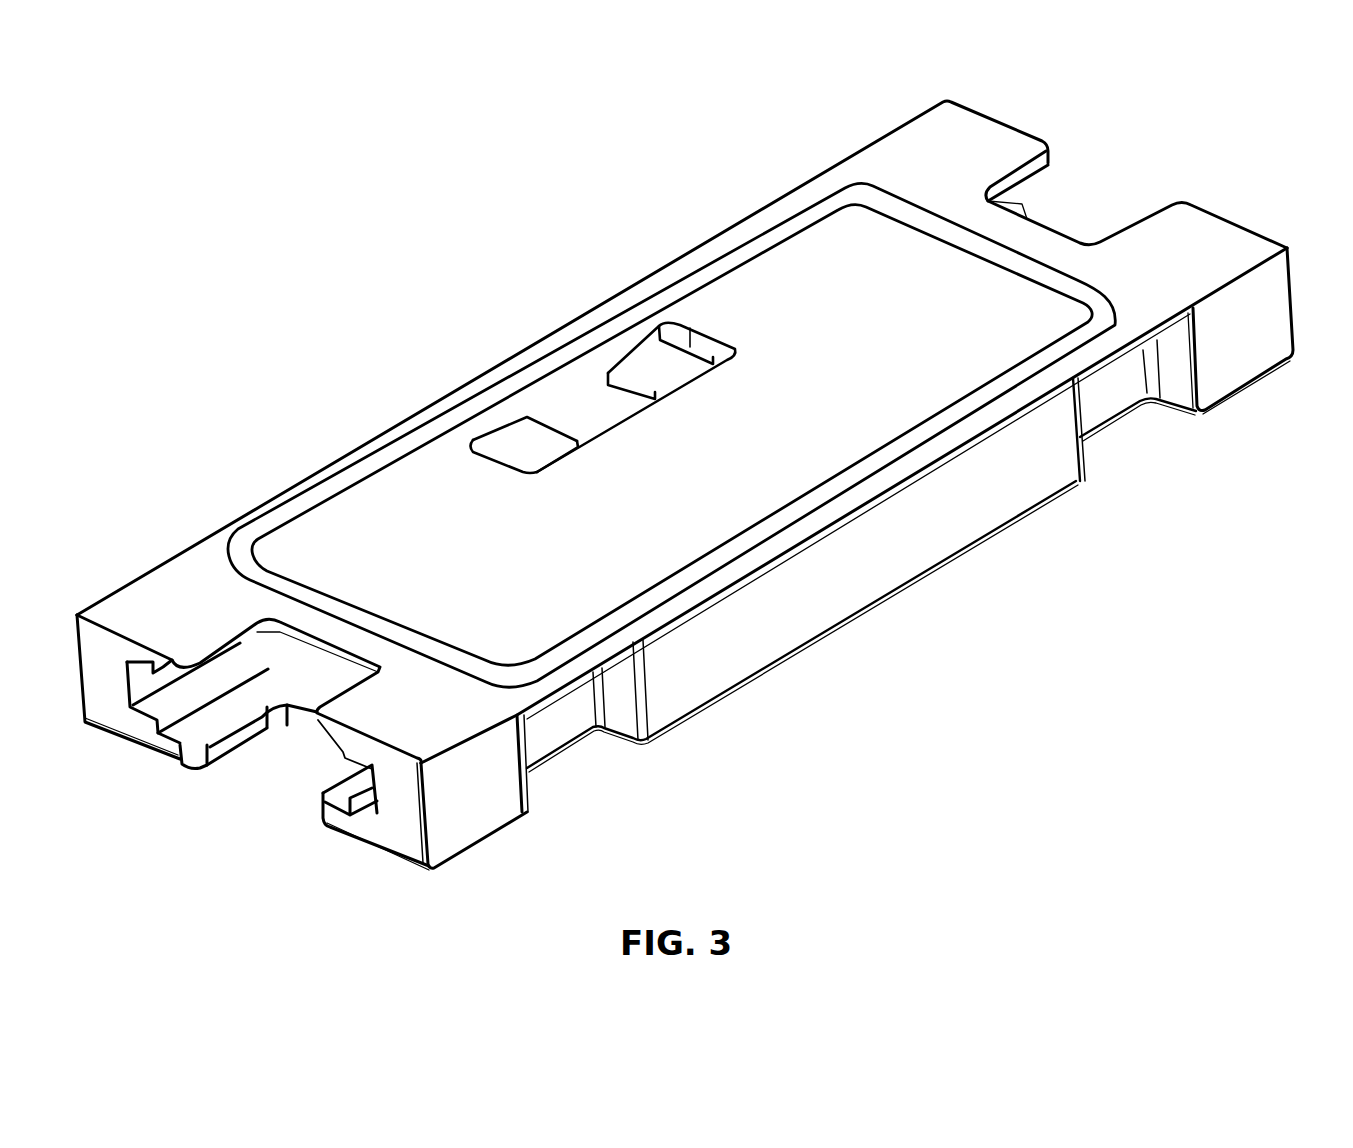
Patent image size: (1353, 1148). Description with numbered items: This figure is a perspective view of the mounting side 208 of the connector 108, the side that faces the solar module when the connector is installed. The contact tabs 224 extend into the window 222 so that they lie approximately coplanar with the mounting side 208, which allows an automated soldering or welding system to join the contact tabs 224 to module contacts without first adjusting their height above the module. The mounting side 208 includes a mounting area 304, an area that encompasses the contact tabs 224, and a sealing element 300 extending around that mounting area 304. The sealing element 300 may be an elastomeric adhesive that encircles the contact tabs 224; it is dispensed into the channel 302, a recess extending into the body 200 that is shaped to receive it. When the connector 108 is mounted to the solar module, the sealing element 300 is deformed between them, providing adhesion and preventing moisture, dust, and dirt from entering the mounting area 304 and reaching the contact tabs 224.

The connector 108 is at (278, 247).
The body 200 is at (1245, 383).
The mounting side 208 is at (810, 270).
The window 222 is at (577, 407).
The contact tabs 224 is at (658, 363).
The sealing element 300 is at (870, 202).
The channel 302 is at (477, 685).
The mounting area 304 is at (788, 452).